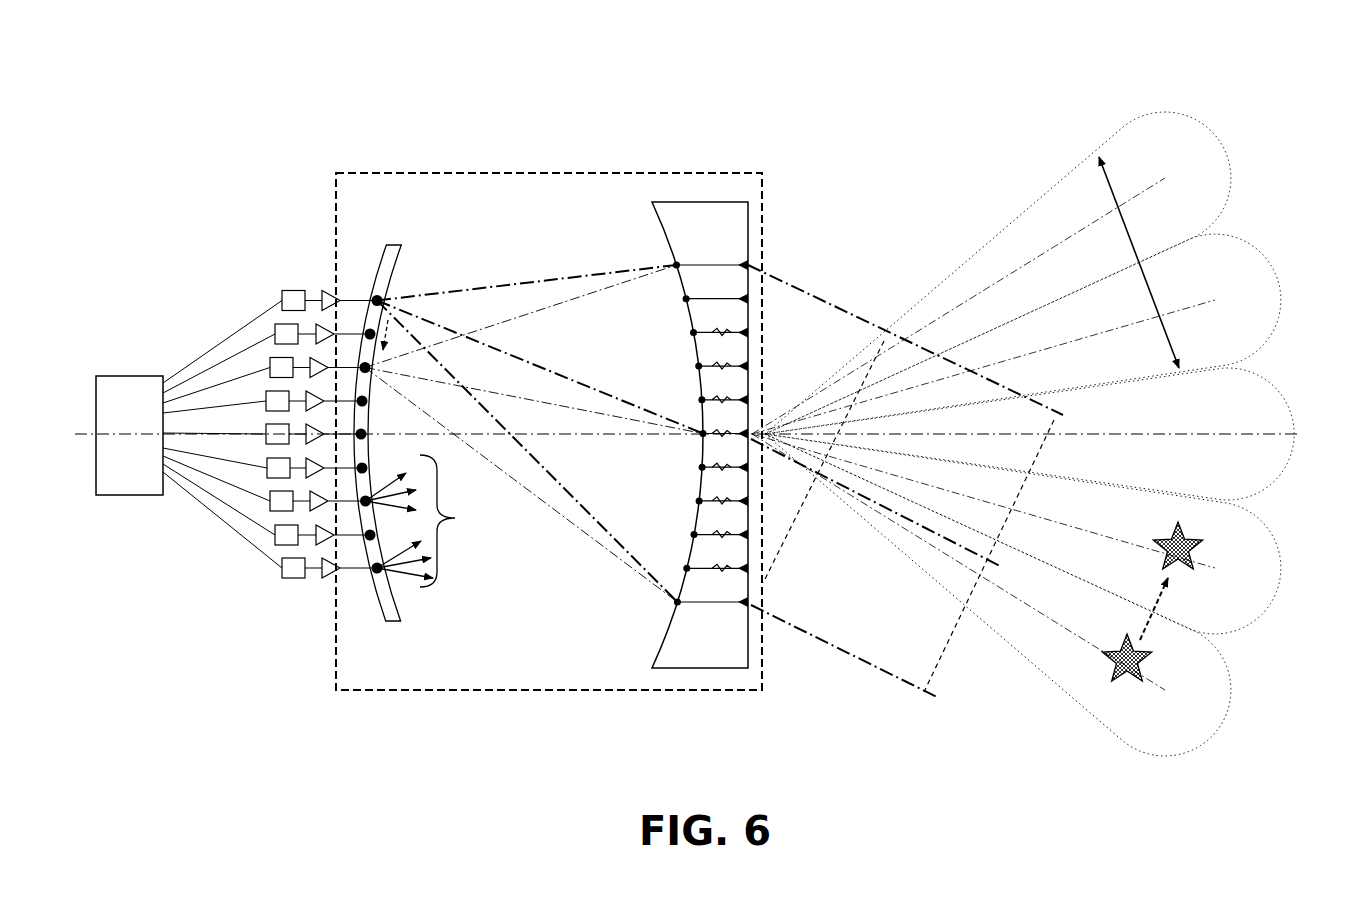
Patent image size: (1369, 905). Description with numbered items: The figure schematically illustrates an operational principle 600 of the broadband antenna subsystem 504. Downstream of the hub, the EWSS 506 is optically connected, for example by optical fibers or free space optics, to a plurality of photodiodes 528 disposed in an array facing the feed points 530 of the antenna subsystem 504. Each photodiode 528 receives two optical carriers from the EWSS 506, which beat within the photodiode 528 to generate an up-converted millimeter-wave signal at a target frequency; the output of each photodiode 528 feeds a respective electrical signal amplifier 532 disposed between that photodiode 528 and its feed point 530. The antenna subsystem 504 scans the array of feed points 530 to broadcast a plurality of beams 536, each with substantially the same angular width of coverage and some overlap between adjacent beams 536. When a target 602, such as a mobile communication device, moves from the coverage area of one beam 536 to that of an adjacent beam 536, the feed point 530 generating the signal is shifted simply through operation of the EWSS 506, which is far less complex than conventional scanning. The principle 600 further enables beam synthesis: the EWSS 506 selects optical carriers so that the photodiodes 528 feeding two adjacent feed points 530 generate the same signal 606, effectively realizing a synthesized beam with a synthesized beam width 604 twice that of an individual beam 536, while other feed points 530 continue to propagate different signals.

The broadband antenna subsystem 504 is at (625, 172).
The EWSS 506 is at (189, 435).
The photodiodes 528 is at (290, 278).
The feed points 530 is at (393, 296).
The electrical signal amplifier 532 is at (316, 596).
The beams 536 is at (1042, 434).
The operational principle 600 is at (1206, 118).
The target 602 is at (1136, 601).
The synthesized beam width 604 is at (1115, 212).
The signal 606 is at (433, 521).